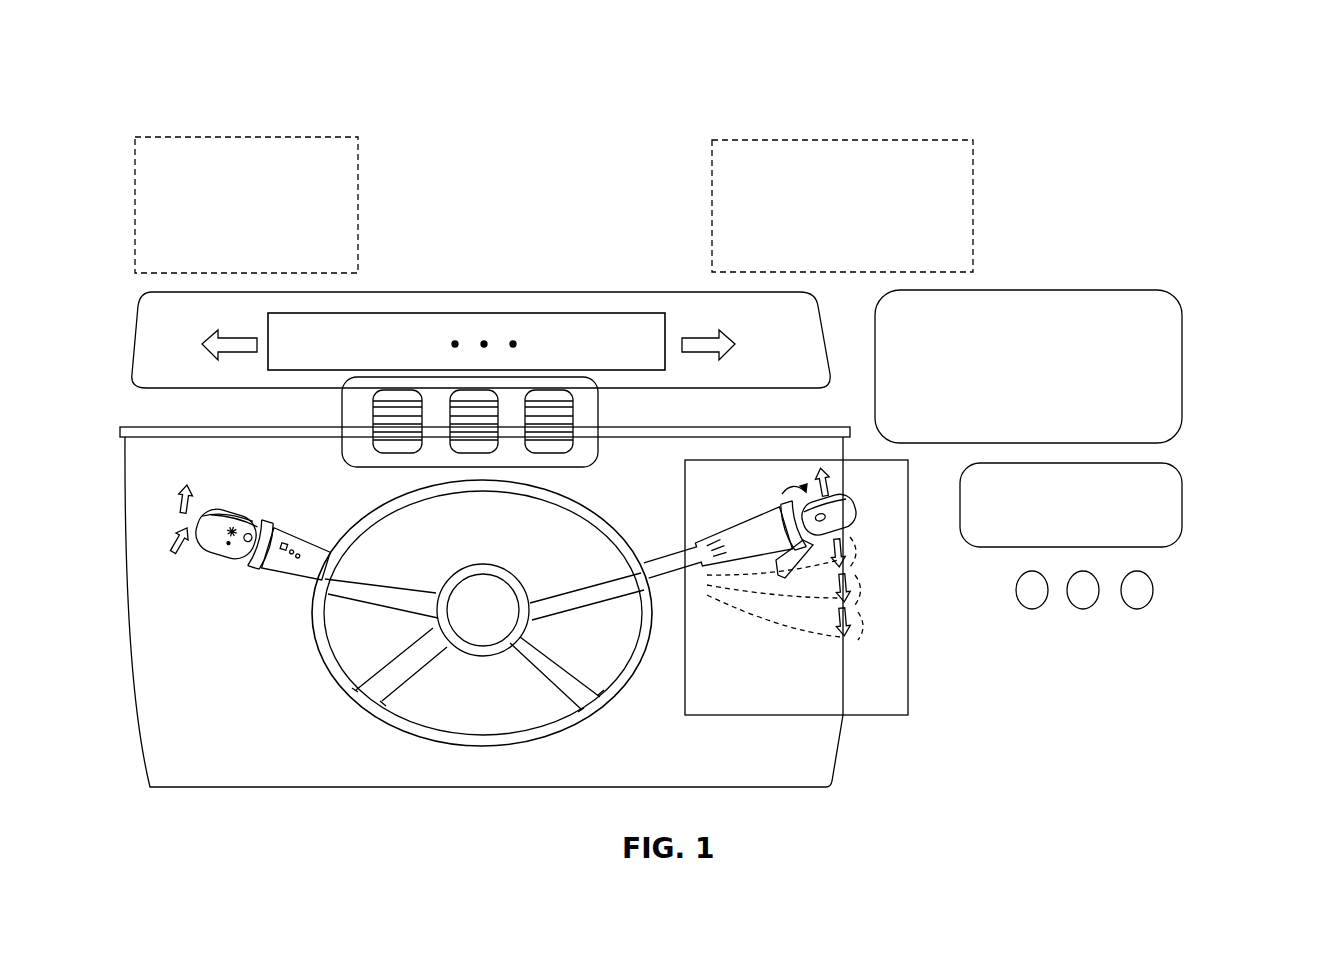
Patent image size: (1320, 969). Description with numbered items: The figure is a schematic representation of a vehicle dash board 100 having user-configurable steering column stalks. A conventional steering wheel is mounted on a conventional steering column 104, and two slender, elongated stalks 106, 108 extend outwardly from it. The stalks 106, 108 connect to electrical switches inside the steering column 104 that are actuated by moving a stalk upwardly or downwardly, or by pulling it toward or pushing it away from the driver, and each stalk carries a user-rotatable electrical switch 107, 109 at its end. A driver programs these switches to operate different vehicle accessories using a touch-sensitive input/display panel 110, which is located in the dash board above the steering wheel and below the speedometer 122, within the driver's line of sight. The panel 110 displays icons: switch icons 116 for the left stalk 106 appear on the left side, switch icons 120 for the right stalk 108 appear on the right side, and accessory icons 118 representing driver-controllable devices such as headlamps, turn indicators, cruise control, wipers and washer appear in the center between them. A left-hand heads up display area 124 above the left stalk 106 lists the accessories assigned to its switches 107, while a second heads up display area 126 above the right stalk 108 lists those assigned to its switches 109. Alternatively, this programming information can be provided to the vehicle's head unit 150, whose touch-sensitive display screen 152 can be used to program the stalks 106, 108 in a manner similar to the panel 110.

The vehicle dash board 100 is at (949, 81).
The steering column 104 is at (497, 565).
The left stalk 106 is at (392, 578).
The user-rotatable electrical switch 107 is at (243, 500).
The right stalk 108 is at (675, 568).
The user-rotatable electrical switch 109 is at (755, 508).
The touch-sensitive input/display panel 110 is at (600, 408).
The switch icons for left stalk 116 is at (373, 416).
The vehicle accessory icons 118 is at (498, 436).
The switch icons for right stalk 120 is at (573, 436).
The speedometer 122 is at (480, 312).
The left-hand heads up display area 124 is at (332, 198).
The second heads up display area 126 is at (712, 230).
The head unit 150 is at (1202, 257).
The touch-sensitive display screen 152 is at (1054, 382).